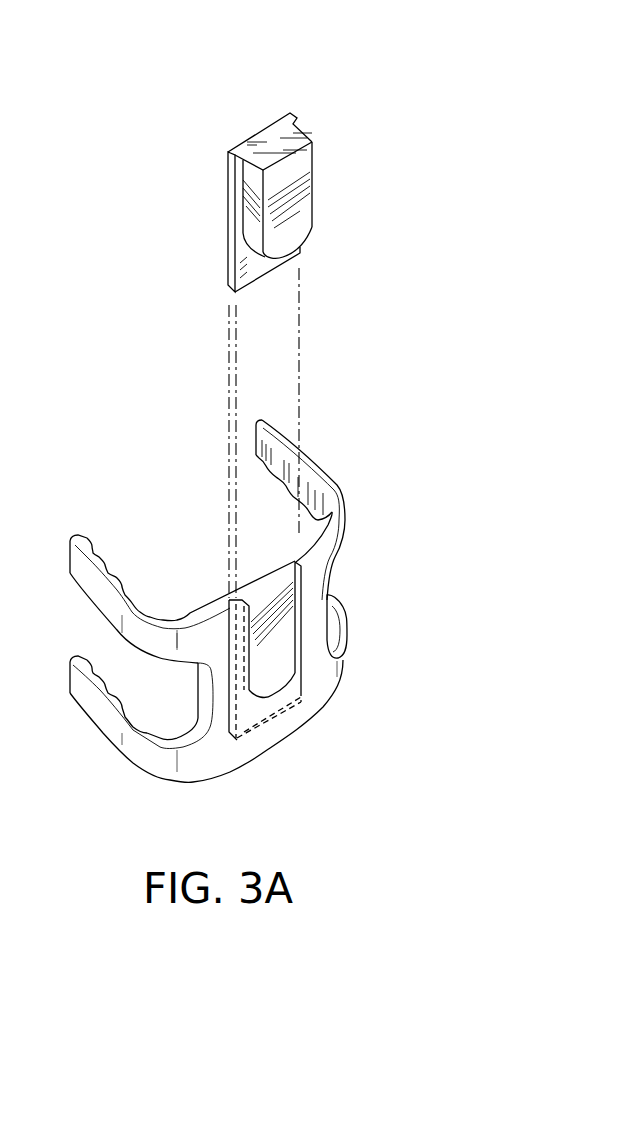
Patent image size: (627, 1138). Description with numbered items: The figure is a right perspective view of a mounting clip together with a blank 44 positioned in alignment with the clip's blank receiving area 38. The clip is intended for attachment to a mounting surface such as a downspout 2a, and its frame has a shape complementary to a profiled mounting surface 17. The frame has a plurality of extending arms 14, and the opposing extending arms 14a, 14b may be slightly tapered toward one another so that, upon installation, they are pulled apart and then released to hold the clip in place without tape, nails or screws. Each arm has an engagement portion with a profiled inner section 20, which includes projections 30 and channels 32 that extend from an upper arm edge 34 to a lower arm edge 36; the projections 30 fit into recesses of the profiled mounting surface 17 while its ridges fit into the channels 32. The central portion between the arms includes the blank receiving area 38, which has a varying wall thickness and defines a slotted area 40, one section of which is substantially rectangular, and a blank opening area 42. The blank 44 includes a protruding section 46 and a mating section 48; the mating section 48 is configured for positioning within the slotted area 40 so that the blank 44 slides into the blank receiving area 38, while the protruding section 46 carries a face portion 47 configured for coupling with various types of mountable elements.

The downspout 2a is at (9, 39).
The profiled mounting surface 17 is at (8, 151).
The extending arms 14 is at (0, 334).
The opposing extending arm 14a is at (77, 534).
The opposing extending arm 14b is at (258, 422).
The profiled inner section 20 is at (97, 556).
The projections 30 is at (262, 443).
The channels 32 is at (98, 667).
The upper arm edge 34 is at (307, 474).
The lower arm edge 36 is at (112, 745).
The blank receiving area 38 is at (270, 592).
The slotted area 40 is at (267, 727).
The blank opening area 42 is at (290, 685).
The blank 44 is at (295, 95).
The protruding section 46 is at (293, 228).
The face portion 47 is at (295, 172).
The mating section 48 is at (228, 237).